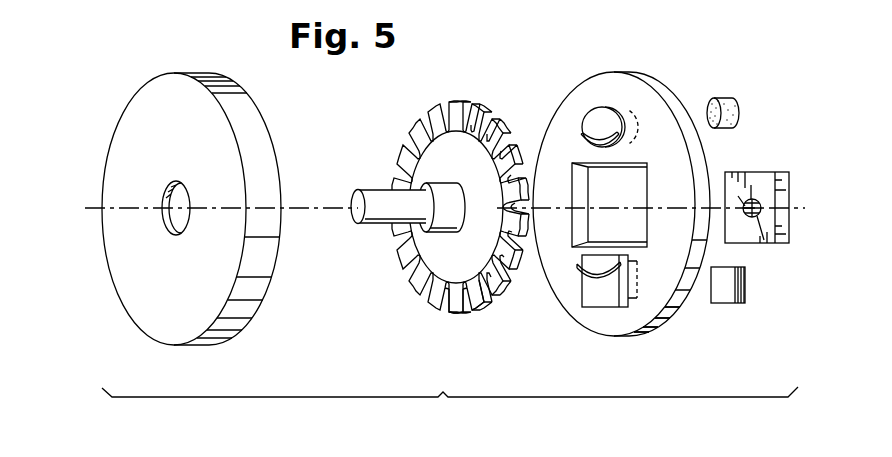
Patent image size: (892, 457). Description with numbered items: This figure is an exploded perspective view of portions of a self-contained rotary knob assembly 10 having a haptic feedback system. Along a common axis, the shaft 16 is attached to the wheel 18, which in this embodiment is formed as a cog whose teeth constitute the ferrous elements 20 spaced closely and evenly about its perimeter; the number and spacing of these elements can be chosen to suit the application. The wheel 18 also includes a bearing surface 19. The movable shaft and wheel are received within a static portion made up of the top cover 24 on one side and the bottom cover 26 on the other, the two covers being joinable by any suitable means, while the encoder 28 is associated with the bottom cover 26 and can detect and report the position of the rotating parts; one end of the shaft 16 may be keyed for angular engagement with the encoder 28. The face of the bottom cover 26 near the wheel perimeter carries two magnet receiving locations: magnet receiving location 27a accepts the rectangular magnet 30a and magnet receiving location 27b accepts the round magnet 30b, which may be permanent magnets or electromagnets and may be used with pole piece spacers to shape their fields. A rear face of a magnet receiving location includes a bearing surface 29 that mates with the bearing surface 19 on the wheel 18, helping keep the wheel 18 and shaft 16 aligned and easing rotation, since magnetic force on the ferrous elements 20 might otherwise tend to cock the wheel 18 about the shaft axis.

The rotary knob assembly 10 is at (450, 407).
The shaft 16 is at (367, 214).
The wheel 18 is at (474, 91).
The bearing surface 19 is at (596, 122).
The ferrous elements 20 is at (487, 304).
The top cover 24 is at (258, 328).
The bottom cover 26 is at (660, 286).
The magnet receiving location 27a is at (637, 338).
The magnet receiving location 27b is at (637, 122).
The encoder 28 is at (750, 172).
The bearing surface 29 is at (597, 271).
The rectangular magnet 30a is at (745, 296).
The round magnet 30b is at (730, 100).